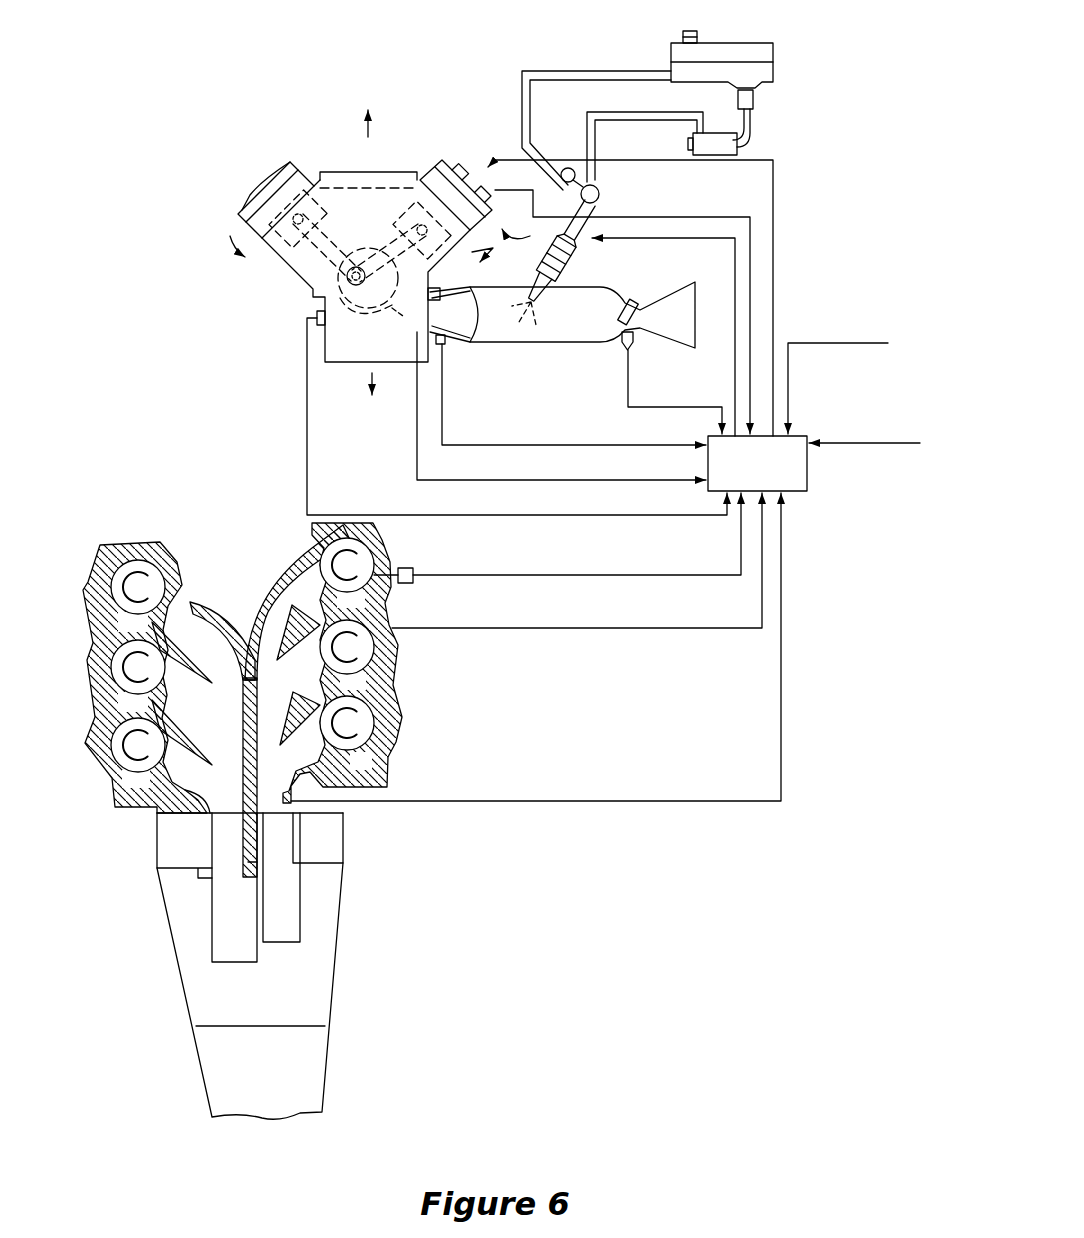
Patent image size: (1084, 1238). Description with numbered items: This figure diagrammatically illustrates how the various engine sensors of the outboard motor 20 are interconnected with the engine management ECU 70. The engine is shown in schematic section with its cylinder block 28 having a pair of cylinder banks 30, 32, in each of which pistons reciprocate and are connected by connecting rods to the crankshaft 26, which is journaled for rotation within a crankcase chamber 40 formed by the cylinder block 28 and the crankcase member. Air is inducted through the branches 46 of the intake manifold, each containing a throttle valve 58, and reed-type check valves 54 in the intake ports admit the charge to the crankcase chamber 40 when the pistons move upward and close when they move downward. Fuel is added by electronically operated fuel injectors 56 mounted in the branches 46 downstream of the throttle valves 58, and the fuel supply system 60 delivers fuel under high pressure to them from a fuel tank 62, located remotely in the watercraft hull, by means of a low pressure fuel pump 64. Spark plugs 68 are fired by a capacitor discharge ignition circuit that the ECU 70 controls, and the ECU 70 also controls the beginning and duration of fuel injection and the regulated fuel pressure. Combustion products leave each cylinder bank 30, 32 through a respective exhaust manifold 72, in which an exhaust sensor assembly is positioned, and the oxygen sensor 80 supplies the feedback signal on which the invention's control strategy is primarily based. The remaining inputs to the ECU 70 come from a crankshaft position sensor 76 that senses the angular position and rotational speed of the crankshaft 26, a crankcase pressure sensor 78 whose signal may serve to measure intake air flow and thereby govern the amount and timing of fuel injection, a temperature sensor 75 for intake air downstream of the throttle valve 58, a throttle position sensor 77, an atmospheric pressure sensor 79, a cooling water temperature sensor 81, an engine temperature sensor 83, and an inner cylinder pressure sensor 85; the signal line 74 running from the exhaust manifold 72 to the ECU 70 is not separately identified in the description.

The outboard motor 20 is at (321, 140).
The crankshaft 26 is at (337, 320).
The cylinder block 28 is at (282, 262).
The cylinder bank 30 is at (252, 167).
The cylinder bank 32 is at (598, 207).
The crankcase chamber 40 is at (316, 334).
The branch of the intake manifold 46 is at (502, 345).
The reed-type check valve 54 is at (480, 344).
The fuel injector 56 is at (583, 250).
The throttle valve 58 is at (636, 303).
The fuel supply system 60 is at (601, 70).
The fuel tank 62 is at (812, 50).
The low pressure fuel pump 64 is at (723, 143).
The spark plug 68 is at (475, 163).
The engine management ECU 70 is at (808, 480).
The exhaust manifold 72 is at (285, 597).
The manifold temperature sensor signal line 74 is at (536, 647).
The temperature sensor 75 is at (574, 394).
The crankshaft position sensor 76 is at (392, 322).
The throttle position sensor 77 is at (624, 349).
The crankcase pressure sensor 78 is at (517, 416).
The atmospheric pressure sensor 79 is at (838, 374).
The oxygen sensor 80 is at (557, 538).
The cooling water temperature sensor 81 is at (864, 430).
The engine temperature sensor 83 is at (577, 560).
The inner cylinder pressure sensor 85 is at (630, 298).